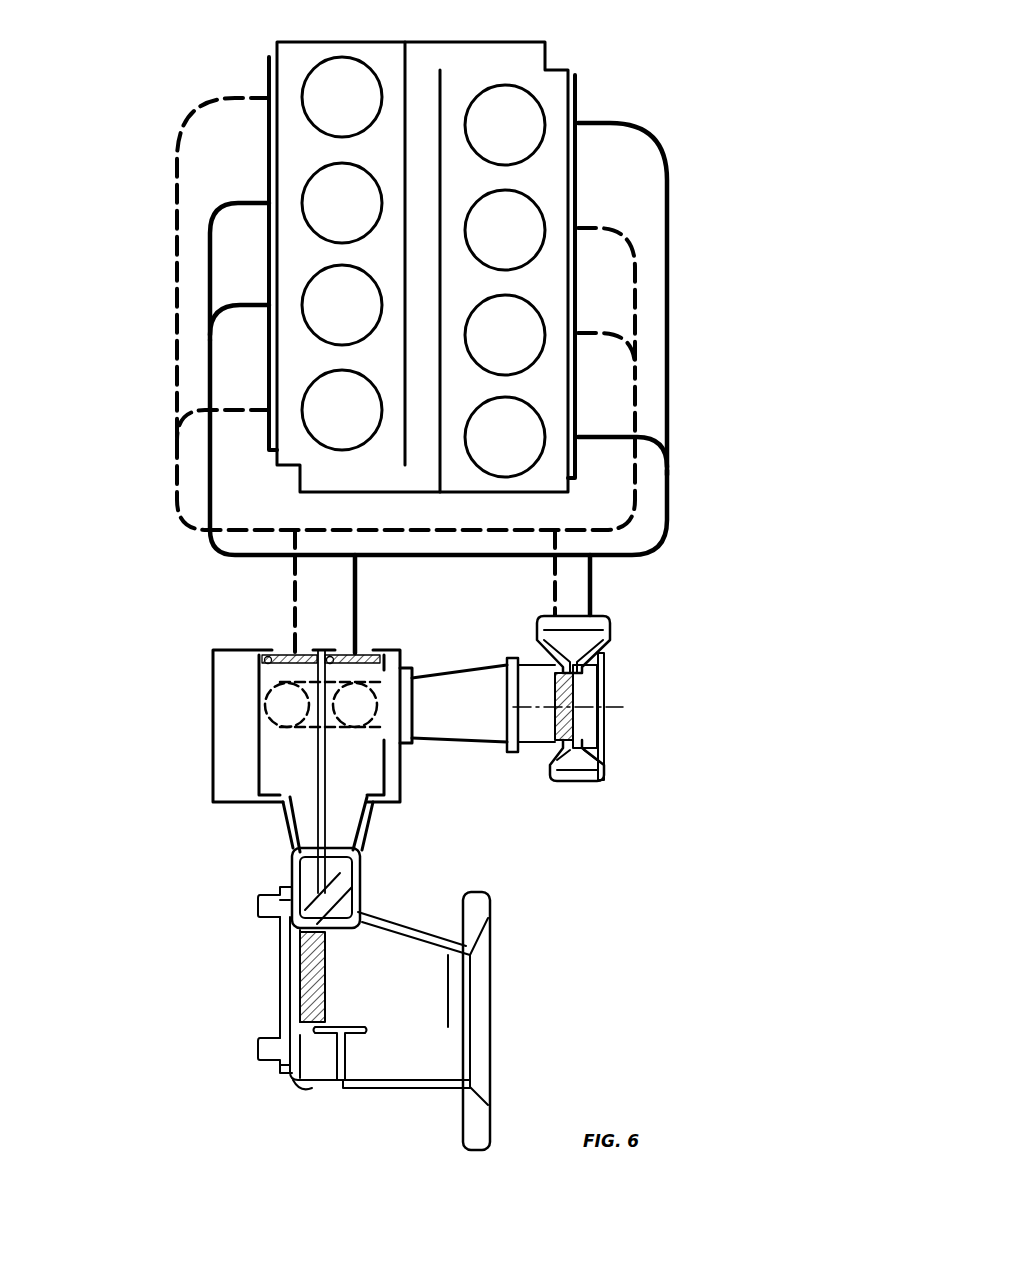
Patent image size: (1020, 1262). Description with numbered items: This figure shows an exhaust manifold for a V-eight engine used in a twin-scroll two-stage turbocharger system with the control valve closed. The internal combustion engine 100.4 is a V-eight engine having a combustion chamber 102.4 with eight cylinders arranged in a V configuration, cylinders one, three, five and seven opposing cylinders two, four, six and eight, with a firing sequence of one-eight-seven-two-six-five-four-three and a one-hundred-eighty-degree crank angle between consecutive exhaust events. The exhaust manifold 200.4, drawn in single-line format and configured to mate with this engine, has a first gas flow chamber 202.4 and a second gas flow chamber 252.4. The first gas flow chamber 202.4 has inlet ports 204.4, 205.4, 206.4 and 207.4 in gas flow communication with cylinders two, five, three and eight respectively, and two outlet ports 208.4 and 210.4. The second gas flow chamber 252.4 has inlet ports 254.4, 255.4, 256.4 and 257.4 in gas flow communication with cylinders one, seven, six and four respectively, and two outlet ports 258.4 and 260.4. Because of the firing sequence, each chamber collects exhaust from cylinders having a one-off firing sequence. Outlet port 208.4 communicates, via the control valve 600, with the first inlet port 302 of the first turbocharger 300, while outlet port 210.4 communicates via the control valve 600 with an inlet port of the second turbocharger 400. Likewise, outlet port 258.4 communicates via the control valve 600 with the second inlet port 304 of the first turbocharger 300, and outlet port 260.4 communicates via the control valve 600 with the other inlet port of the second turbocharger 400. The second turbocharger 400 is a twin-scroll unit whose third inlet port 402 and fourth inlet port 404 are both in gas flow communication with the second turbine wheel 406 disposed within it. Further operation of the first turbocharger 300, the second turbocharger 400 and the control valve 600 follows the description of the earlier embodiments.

The internal combustion engine 100.4 is at (562, 58).
The combustion chamber 102.4 is at (478, 95).
The exhaust manifold 200.4 is at (176, 392).
The first gas flow chamber 202.4 is at (660, 545).
The first inlet port 204.4 is at (628, 125).
The second inlet port 205.4 is at (238, 305).
The third inlet port 206.4 is at (232, 205).
The fourth inlet port 207.4 is at (605, 437).
The outlet port 208.4 is at (596, 608).
The outlet port 210.4 is at (360, 600).
The second gas flow chamber 252.4 is at (182, 512).
The fifth inlet port 254.4 is at (215, 98).
The sixth inlet port 255.4 is at (250, 418).
The seventh inlet port 256.4 is at (600, 333).
The eighth inlet port 257.4 is at (612, 232).
The outlet port 258.4 is at (552, 612).
The outlet port 260.4 is at (292, 605).
The first turbocharger 300 is at (561, 730).
The first inlet port 302 is at (612, 640).
The second inlet port 304 is at (516, 660).
The second turbocharger 400 is at (332, 995).
The third inlet port 402 is at (305, 875).
The fourth inlet port 404 is at (352, 870).
The second turbine wheel 406 is at (298, 965).
The control valve 600 is at (215, 750).